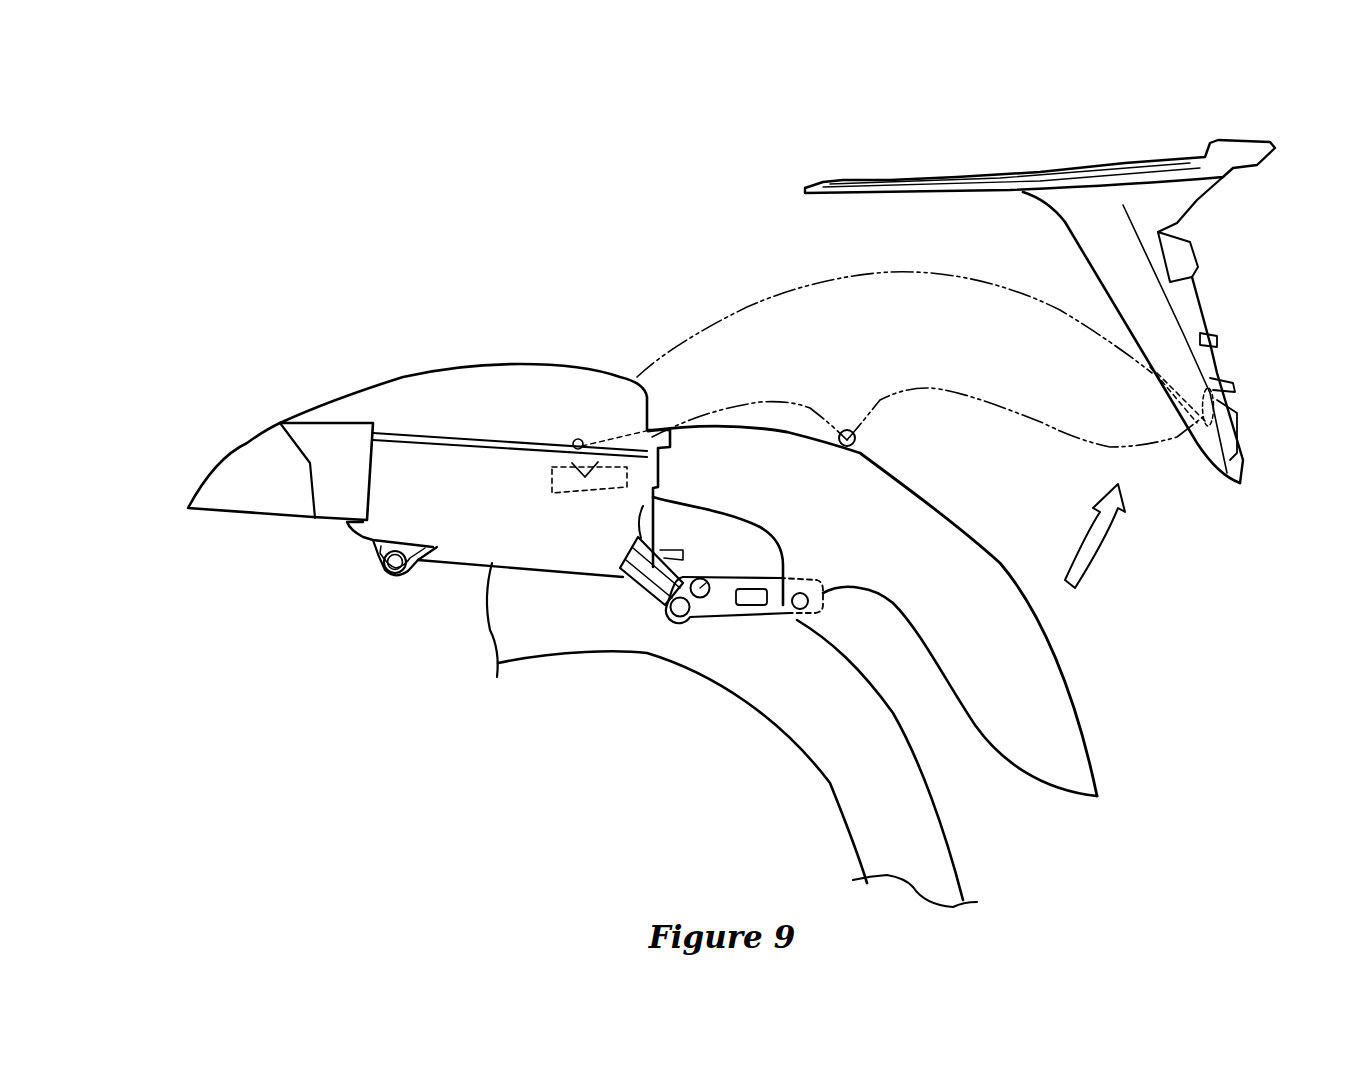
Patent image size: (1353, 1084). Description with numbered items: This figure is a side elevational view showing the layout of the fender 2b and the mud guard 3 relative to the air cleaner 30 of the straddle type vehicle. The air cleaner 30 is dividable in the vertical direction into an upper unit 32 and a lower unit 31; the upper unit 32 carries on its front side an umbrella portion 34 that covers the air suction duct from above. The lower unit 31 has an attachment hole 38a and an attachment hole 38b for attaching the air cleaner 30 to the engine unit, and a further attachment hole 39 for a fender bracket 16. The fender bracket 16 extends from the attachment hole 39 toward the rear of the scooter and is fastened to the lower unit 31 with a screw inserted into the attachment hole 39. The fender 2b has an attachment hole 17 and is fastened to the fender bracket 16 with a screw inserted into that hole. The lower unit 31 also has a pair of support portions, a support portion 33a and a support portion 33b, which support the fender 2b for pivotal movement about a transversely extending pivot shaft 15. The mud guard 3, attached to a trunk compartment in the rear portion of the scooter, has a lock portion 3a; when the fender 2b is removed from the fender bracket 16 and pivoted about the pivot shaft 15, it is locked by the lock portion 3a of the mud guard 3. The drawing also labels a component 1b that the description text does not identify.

The vehicle body panel 1b is at (947, 816).
The fender 2b is at (732, 289).
The mud guard 3 is at (1185, 148).
The lock portion 3a is at (1212, 400).
The pivot shaft 15 is at (577, 440).
The fender bracket 16 is at (780, 590).
The attachment hole 17 is at (808, 604).
The air cleaner 30 is at (443, 358).
The lower unit 31 is at (465, 548).
The upper unit 32 is at (505, 400).
The support portion 33a is at (587, 440).
The support portion 33b is at (626, 378).
The umbrella portion 34 is at (268, 448).
The attachment hole 38a is at (390, 578).
The attachment hole 38b is at (683, 620).
The attachment hole 39 is at (702, 572).